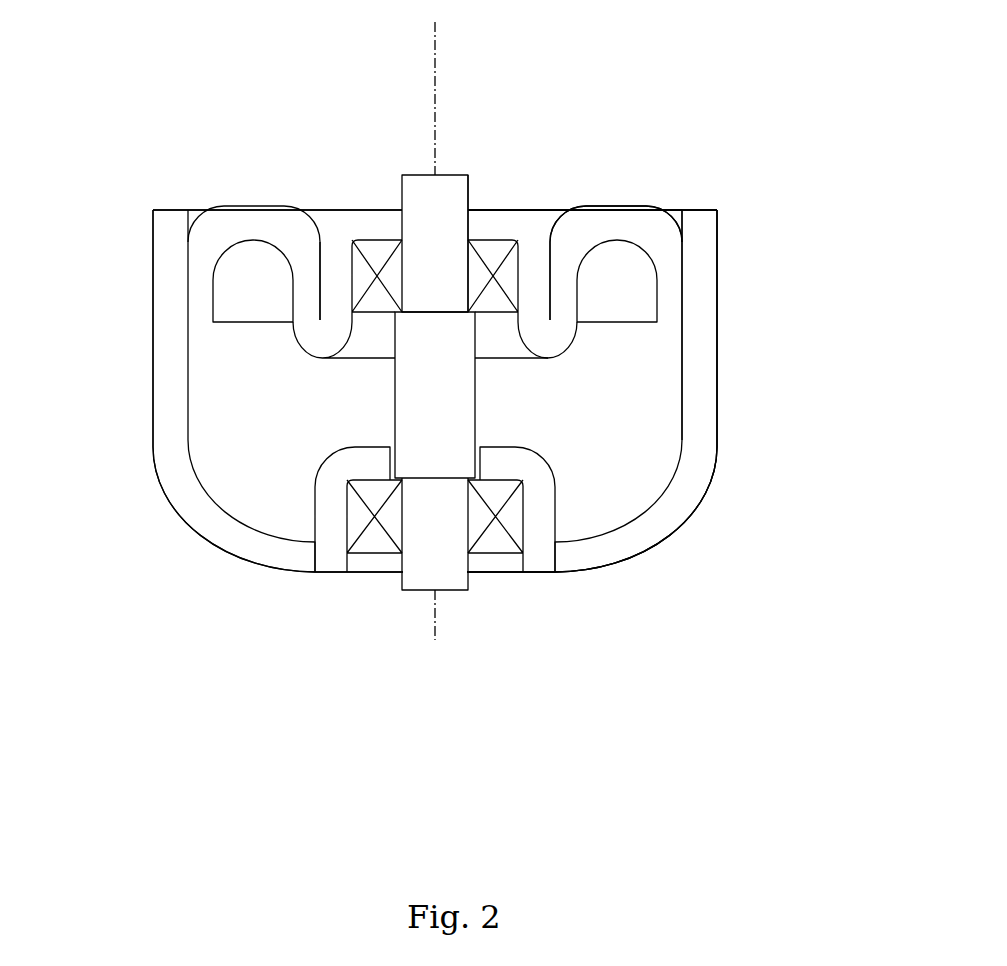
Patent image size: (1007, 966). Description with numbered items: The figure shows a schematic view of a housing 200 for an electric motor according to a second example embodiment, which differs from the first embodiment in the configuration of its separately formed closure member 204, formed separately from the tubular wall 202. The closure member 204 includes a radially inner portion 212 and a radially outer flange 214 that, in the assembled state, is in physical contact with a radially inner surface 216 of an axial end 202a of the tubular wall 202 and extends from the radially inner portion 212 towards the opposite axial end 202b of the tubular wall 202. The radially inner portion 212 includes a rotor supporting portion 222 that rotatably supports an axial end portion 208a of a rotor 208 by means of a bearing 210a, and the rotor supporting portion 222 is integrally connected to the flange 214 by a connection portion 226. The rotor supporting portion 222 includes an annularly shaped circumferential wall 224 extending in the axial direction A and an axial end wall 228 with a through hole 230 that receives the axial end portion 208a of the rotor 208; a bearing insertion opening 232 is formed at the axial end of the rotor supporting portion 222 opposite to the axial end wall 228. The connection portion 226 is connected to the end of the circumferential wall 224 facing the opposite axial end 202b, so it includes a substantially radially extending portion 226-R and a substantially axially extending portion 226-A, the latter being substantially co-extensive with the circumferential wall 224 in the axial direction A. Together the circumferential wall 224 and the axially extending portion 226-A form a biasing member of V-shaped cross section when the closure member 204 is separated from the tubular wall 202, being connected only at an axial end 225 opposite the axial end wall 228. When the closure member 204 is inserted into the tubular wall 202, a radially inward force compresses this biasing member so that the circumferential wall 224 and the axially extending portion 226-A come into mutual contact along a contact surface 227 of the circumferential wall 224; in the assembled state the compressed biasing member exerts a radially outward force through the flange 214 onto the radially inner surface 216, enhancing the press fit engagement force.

The axial direction A is at (438, 59).
The housing 200 is at (765, 152).
The tubular wall 202 is at (724, 398).
The axial end of the tubular wall 202a is at (725, 233).
The opposite axial end of the tubular wall 202b is at (708, 518).
The separately formed closure member 204 is at (613, 157).
The rotor 208 is at (454, 406).
The axial end portion of the rotor 208a is at (458, 258).
The bearing 210a is at (375, 254).
The radially inner portion 212 is at (577, 157).
The radially outer flange 214 is at (672, 273).
The radially inner surface 216 is at (688, 293).
The rotor supporting portion 222 is at (588, 342).
The circumferential wall 224 is at (537, 295).
The axial end 225 is at (291, 347).
The connection portion 226 is at (648, 170).
The axially extending portion 226-A is at (567, 285).
The radially extending portion 226-R is at (648, 212).
The contact surface 227 is at (315, 287).
The axial end wall 228 is at (493, 215).
The through hole 230 is at (475, 193).
The bearing insertion opening 232 is at (525, 358).